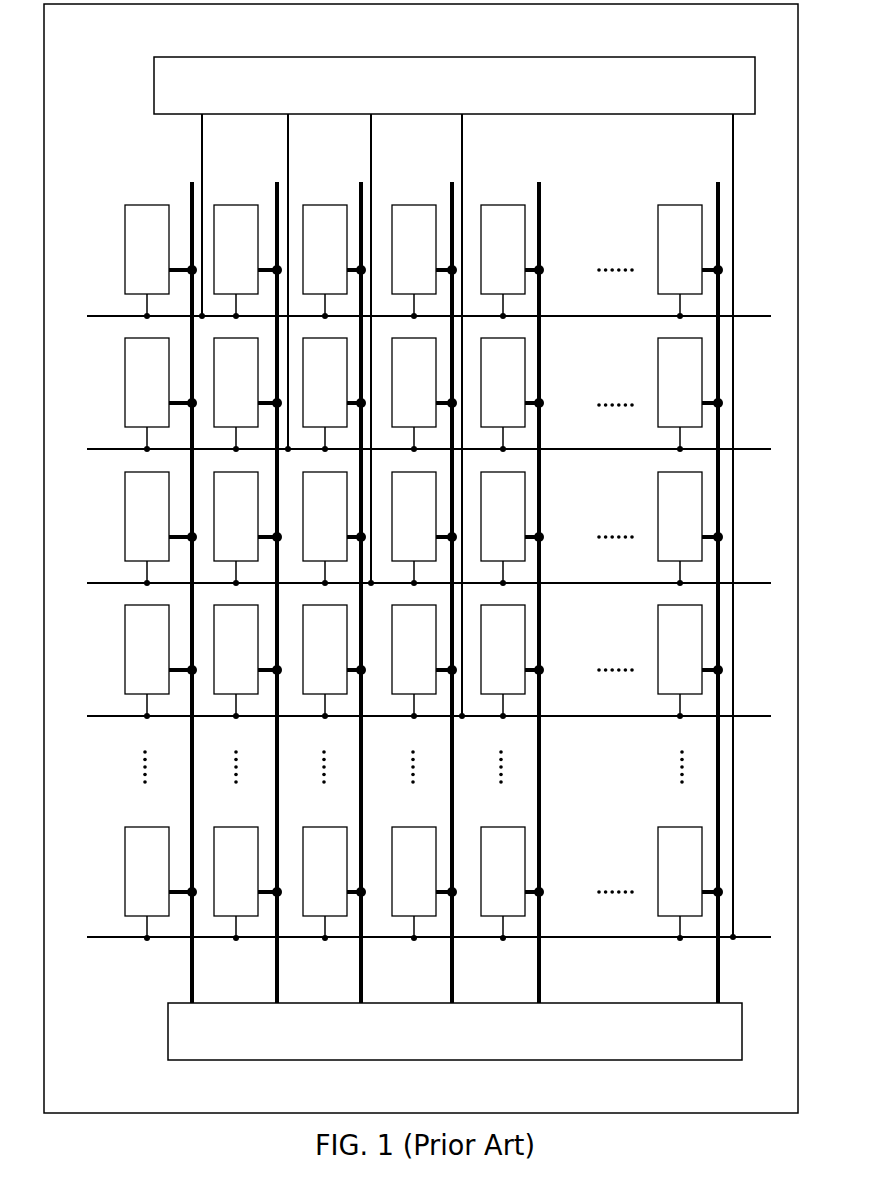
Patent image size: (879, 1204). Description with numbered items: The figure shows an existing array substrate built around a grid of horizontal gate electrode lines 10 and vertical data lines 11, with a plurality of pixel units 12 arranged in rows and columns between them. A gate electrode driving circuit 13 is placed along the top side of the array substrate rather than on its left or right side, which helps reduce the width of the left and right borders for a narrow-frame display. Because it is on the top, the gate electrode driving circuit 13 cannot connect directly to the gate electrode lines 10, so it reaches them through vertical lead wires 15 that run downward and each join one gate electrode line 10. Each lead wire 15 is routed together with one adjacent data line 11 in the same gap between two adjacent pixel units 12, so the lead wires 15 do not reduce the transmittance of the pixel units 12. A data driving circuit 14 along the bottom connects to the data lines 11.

The gate electrode line 10 is at (105, 314).
The data line 11 is at (192, 200).
The pixel unit 12 is at (125, 230).
The gate electrode driving circuit 13 is at (173, 90).
The data driving circuit 14 is at (178, 1052).
The lead wire 15 is at (202, 162).